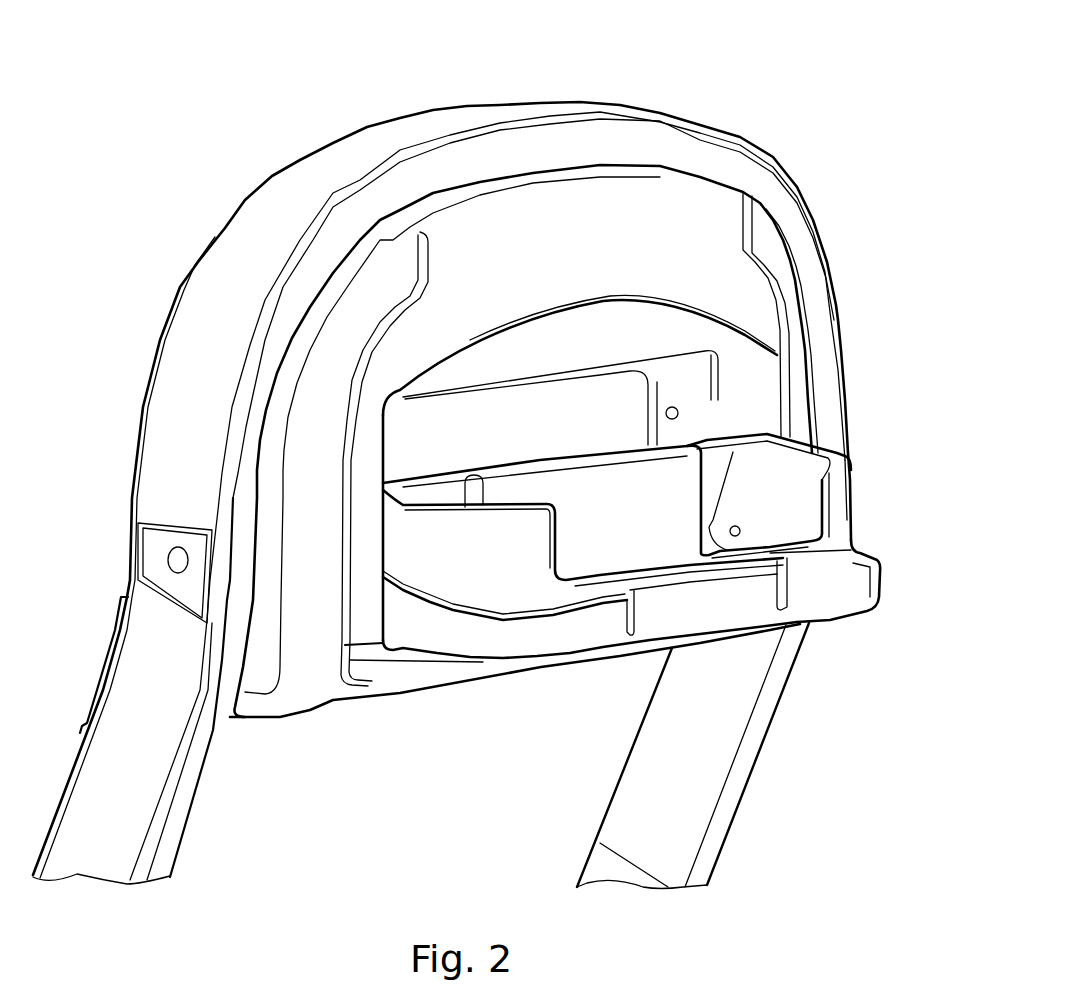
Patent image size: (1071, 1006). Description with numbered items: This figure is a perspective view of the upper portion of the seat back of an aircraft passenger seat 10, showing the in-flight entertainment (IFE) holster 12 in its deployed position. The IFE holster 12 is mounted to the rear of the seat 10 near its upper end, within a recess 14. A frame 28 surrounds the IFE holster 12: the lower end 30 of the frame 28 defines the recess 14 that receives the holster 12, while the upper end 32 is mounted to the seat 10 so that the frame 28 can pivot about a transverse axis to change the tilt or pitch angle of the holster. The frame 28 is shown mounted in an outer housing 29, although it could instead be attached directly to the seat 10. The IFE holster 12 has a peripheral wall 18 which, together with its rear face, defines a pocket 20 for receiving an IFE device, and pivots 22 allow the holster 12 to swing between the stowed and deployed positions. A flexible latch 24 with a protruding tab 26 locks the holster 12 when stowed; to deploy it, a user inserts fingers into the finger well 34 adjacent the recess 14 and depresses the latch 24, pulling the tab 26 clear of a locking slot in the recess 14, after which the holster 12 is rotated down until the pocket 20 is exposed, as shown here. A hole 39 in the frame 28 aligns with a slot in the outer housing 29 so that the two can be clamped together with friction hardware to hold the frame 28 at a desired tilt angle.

The aircraft passenger seat 10 is at (656, 76).
The IFE holster 12 is at (862, 525).
The recess 14 is at (742, 383).
The peripheral wall 18 is at (837, 500).
The pocket 20 is at (780, 497).
The pivots 22 is at (740, 522).
The flexible latch 24 is at (698, 611).
The protruding tab 26 is at (751, 566).
The frame 28 is at (740, 290).
The outer housing 29 is at (327, 342).
The lower end 30 is at (373, 642).
The upper end 32 is at (399, 203).
The finger well 34 is at (668, 334).
The hole 39 is at (676, 408).